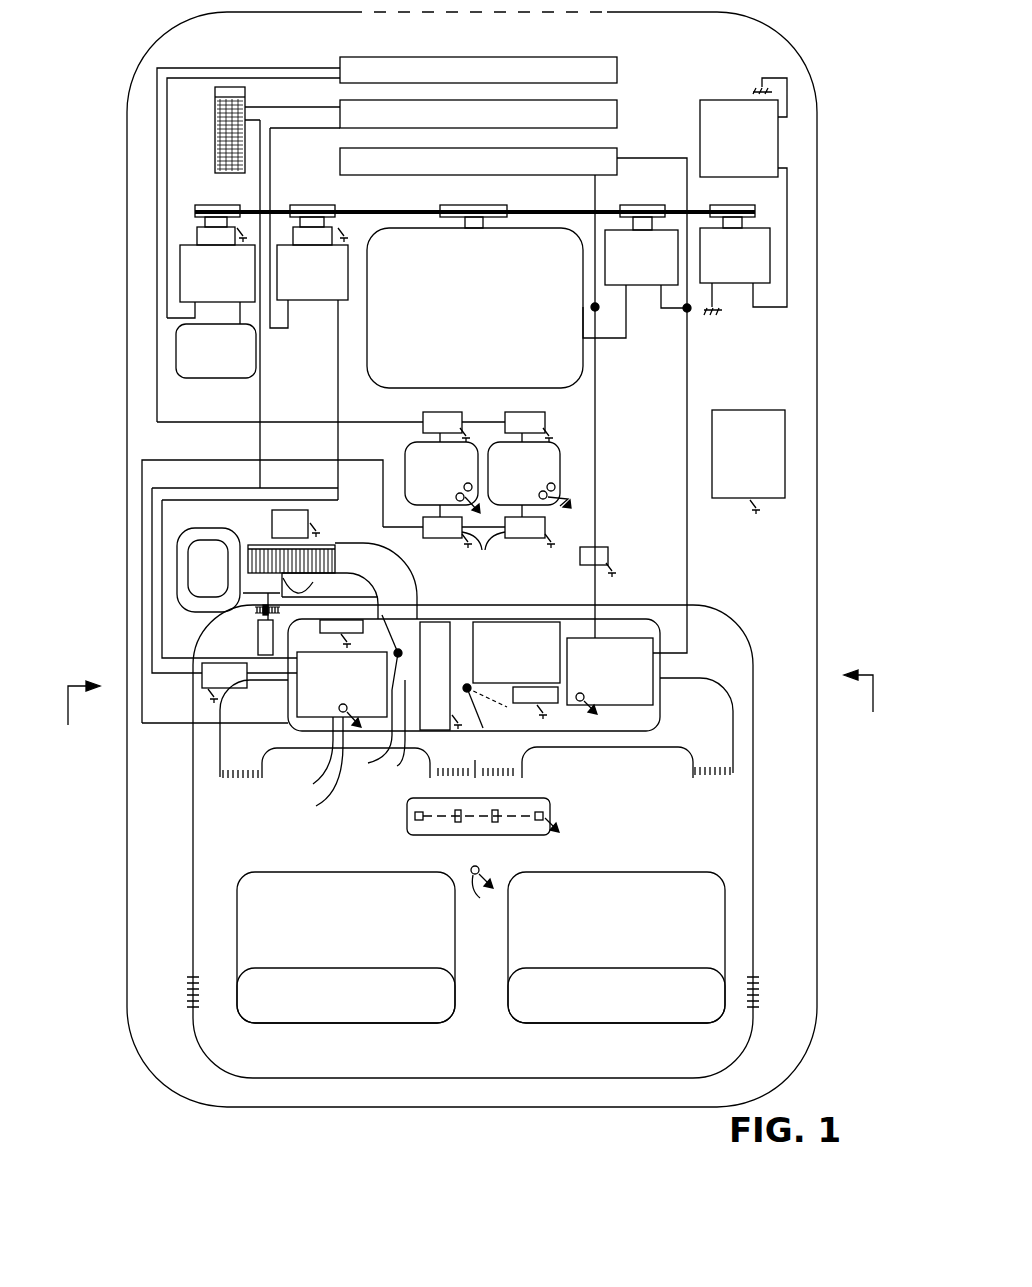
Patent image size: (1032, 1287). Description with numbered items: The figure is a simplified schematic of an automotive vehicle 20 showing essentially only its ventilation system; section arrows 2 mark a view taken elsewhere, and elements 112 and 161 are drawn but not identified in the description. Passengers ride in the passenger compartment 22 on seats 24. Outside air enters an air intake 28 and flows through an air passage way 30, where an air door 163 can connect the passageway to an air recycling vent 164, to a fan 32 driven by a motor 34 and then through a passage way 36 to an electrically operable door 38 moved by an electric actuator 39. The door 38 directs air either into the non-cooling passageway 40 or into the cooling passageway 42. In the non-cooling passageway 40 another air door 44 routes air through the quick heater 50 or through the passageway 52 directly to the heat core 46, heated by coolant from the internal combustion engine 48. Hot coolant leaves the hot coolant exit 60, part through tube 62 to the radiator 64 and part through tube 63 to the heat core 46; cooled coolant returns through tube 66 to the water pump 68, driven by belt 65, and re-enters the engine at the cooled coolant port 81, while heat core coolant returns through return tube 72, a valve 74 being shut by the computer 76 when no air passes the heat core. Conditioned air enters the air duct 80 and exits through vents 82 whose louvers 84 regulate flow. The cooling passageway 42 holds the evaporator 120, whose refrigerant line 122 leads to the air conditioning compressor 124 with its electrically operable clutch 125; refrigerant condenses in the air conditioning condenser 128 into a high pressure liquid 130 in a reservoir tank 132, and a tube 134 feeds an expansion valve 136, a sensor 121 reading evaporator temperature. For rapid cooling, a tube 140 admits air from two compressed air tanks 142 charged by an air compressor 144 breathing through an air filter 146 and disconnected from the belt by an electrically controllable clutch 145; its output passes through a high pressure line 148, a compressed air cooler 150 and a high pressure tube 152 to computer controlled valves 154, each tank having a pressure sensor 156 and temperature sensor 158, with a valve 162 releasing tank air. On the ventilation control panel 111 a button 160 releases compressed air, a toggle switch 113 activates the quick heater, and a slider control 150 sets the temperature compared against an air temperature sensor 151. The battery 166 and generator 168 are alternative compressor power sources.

The automotive vehicle 20 is at (826, 58).
The section line 2 is at (465, 709).
The passenger compartment 22 is at (735, 852).
The seats 24 is at (345, 1023).
The air intake 28 is at (205, 553).
The air passage way 30 is at (313, 587).
The fan 32 is at (335, 558).
The motor 34 is at (296, 524).
The passage way 36 is at (349, 581).
The electrically operable door 38 is at (398, 653).
The electric actuator 39 is at (333, 617).
The non-cooling passageway 40 is at (388, 730).
The cooling passageway 42 is at (370, 719).
The air door 44 is at (441, 676).
The heat core 46 is at (585, 638).
The internal combustion engine 48 is at (475, 308).
The quick heater 50 is at (547, 619).
The passageway 52 is at (560, 717).
The hot coolant exit 60 is at (594, 310).
The tube 62 is at (594, 182).
The tube 63 is at (595, 512).
The radiator 64 is at (617, 152).
The belt 65 is at (347, 210).
The tube 66 is at (635, 160).
The water pump 68 is at (633, 287).
The return tube 72 is at (687, 375).
The valve 74 is at (612, 556).
The computer 76 is at (790, 452).
The air duct 80 is at (733, 730).
The cooled coolant port 81 is at (583, 344).
The vents 82 is at (236, 780).
The louvers 84 is at (228, 768).
The ventilation control panel 111 is at (405, 814).
The valve 112 is at (580, 703).
The toggle switch 113 is at (546, 825).
The evaporator 120 is at (331, 724).
The sensor 121 is at (318, 762).
The refrigerant line 122 is at (152, 520).
The air conditioning compressor 124 is at (330, 303).
The electrically operable clutch 125 is at (298, 232).
The air conditioning condenser 128 is at (617, 113).
The high pressure liquid 130 is at (222, 127).
The reservoir tank 132 is at (222, 163).
The tube 134 is at (257, 445).
The expansion valve 136 is at (224, 683).
The tube 140 is at (317, 733).
The compressed air tanks 142 is at (405, 472).
The air compressor 144 is at (180, 292).
The electrically controllable clutch 145 is at (197, 233).
The air filter 146 is at (177, 353).
The high pressure line 148 is at (167, 157).
The compressed air cooler 150 is at (617, 70).
The air temperature sensor 151 is at (474, 894).
The high pressure tube 152 is at (157, 113).
The computer controlled valves 154 is at (518, 412).
The pressure sensor 156 is at (545, 505).
The temperature sensor 158 is at (554, 485).
The button 160 is at (418, 822).
The heater element 161 is at (258, 654).
The valve 162 is at (489, 540).
The air door 163 is at (243, 593).
The air recycling vent 164 is at (256, 606).
The battery 166 is at (778, 140).
The generator 168 is at (770, 258).